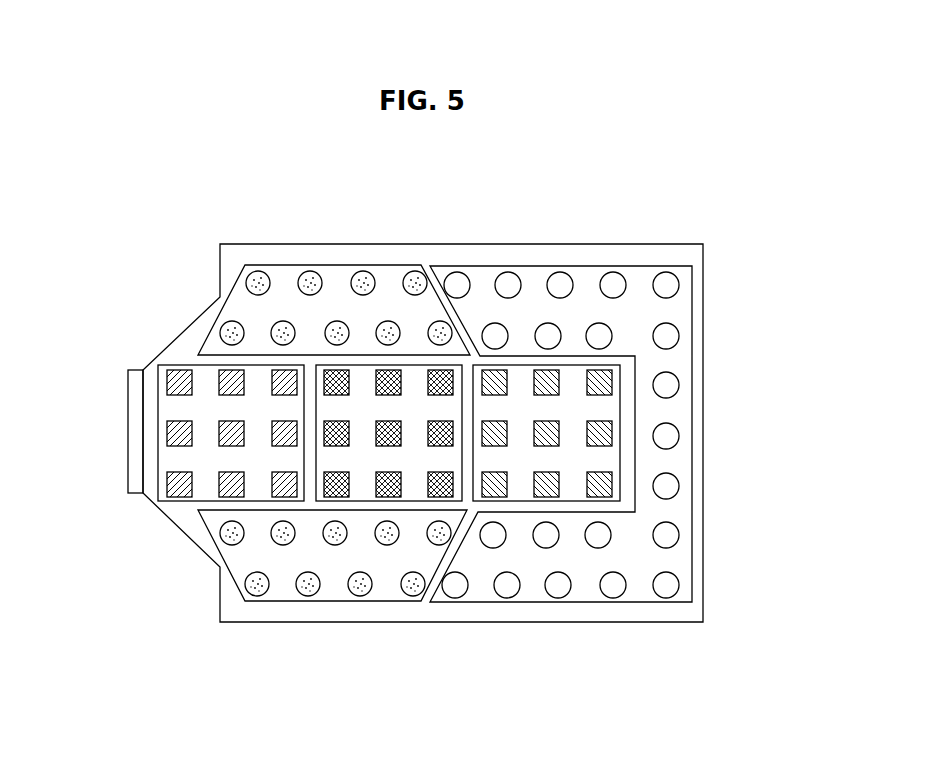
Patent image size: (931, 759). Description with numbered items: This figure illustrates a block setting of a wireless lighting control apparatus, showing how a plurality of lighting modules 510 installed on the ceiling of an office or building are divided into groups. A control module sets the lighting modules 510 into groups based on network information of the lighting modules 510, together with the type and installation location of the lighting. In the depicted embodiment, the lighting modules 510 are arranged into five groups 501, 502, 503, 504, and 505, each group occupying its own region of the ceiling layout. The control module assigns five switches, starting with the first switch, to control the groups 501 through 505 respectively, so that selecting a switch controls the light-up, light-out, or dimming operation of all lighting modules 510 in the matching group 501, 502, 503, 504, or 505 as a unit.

The first group 501 is at (333, 265).
The second group 502 is at (692, 433).
The third group 503 is at (568, 501).
The fourth group 504 is at (362, 501).
The fifth group 505 is at (157, 432).
The lighting module 510 is at (437, 488).